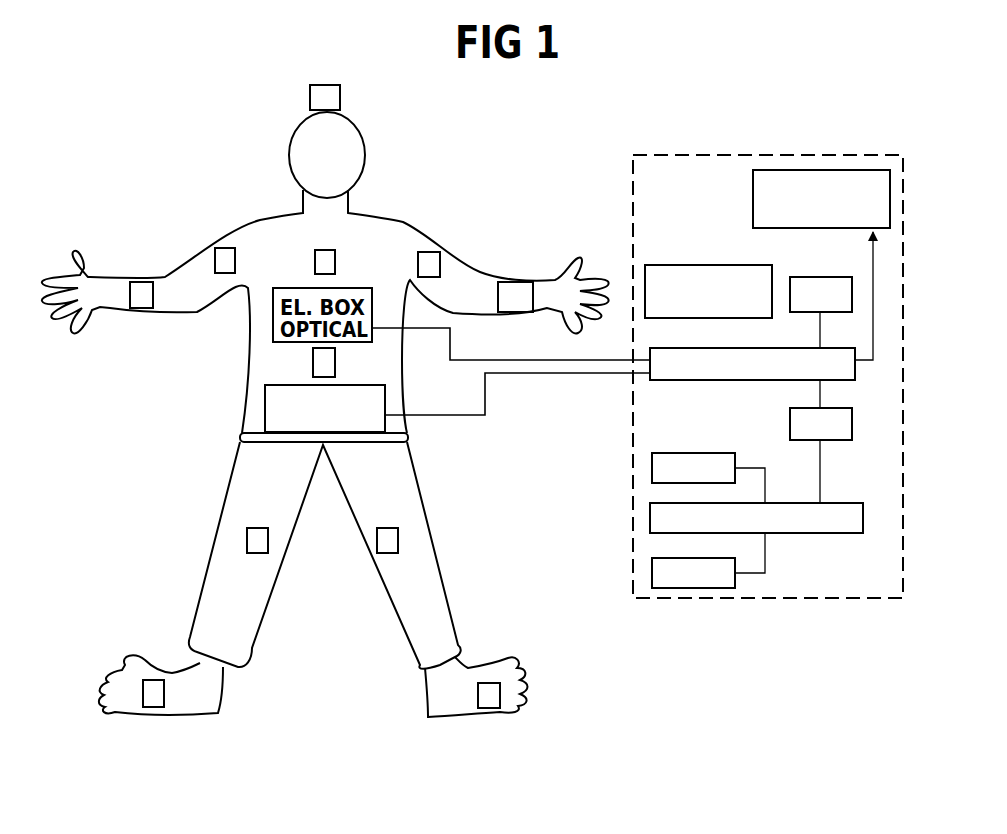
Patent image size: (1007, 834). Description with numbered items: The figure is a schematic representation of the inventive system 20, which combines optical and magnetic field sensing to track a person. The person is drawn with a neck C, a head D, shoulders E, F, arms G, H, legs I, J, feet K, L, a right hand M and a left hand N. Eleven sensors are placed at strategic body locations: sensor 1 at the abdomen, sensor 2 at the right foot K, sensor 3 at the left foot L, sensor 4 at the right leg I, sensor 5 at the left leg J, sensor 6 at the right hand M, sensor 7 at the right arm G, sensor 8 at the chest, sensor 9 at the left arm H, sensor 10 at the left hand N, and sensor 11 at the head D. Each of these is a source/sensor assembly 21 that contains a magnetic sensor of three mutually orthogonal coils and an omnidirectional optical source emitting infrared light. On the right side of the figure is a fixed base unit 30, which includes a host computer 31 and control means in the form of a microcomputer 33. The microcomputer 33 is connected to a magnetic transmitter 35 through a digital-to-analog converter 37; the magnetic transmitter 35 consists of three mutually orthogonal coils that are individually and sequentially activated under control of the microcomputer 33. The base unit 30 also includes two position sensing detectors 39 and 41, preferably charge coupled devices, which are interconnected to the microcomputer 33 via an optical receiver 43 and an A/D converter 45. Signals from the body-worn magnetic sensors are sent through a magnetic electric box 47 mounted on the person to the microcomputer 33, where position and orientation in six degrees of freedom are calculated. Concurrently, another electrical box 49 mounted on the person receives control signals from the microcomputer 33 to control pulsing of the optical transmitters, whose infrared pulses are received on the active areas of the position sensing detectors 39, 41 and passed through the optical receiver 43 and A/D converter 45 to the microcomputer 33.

The sensor 1 is at (324, 362).
The sensor 2 is at (153, 693).
The sensor 3 is at (489, 695).
The sensor 4 is at (257, 540).
The sensor 5 is at (387, 540).
The sensor 6 is at (141, 295).
The sensor 7 is at (225, 260).
The sensor 8 is at (325, 262).
The sensor 9 is at (429, 264).
The sensor 10 is at (515, 297).
The sensor 11 is at (325, 97).
The inventive system 20 is at (470, 433).
The source/sensor assembly 21 is at (310, 95).
The fixed base unit 30 is at (811, 615).
The host computer 31 is at (753, 218).
The microcomputer 33 is at (837, 380).
The magnetic transmitter 35 is at (717, 265).
The digital-to-analog (D/A) converter 37 is at (823, 277).
The position sensing detector 39 is at (720, 453).
The position sensing detector 41 is at (735, 582).
The optical receiver 43 is at (837, 533).
The A/D converter 45 is at (840, 440).
The magnetic electric box 47 is at (408, 435).
The electrical box 49 is at (385, 386).
The neck C is at (350, 213).
The head D is at (363, 137).
The shoulder E is at (248, 220).
The shoulder F is at (403, 222).
The arm G is at (165, 277).
The arm H is at (473, 270).
The leg I is at (203, 607).
The leg J is at (415, 518).
The foot K is at (172, 712).
The foot L is at (468, 715).
The right hand M is at (90, 270).
The left hand N is at (553, 265).